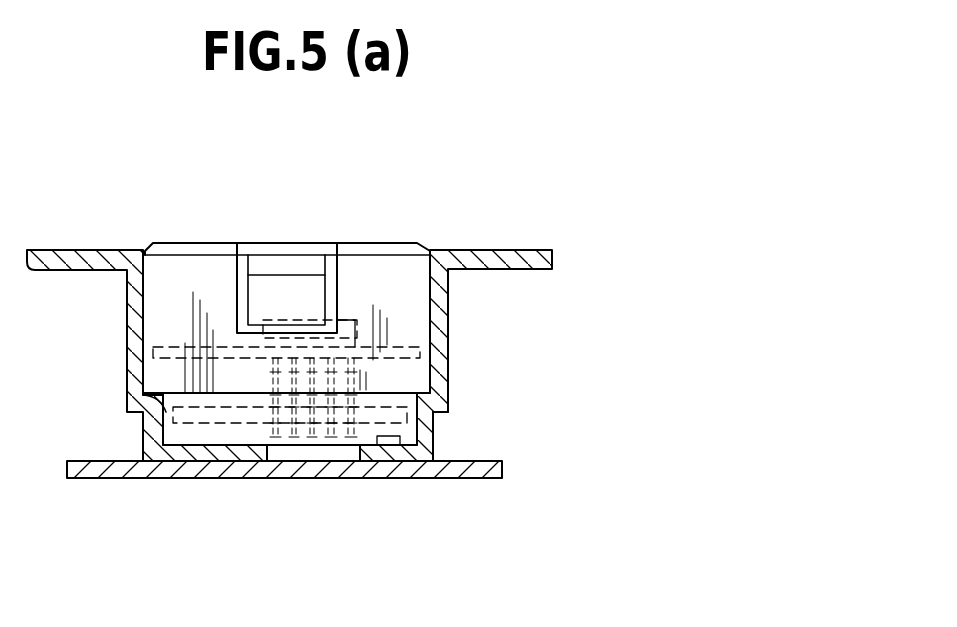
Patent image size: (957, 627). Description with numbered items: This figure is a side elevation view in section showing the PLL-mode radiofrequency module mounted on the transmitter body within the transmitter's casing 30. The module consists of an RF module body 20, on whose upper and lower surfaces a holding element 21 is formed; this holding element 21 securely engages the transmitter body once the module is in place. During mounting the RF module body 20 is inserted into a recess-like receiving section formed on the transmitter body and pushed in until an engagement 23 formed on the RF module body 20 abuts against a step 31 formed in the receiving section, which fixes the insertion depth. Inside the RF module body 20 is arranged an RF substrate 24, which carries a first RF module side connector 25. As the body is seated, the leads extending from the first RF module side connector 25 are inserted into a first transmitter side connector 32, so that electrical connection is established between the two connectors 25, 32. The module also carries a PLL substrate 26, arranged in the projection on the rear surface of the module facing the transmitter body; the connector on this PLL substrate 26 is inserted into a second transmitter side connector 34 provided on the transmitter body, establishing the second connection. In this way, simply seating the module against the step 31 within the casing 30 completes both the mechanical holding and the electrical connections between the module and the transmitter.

The RF module body 20 is at (378, 262).
The holding element 21 is at (285, 250).
The engagement 23 is at (168, 404).
The RF substrate 24 is at (400, 345).
The first RF module side connector 25 is at (350, 320).
The PLL substrate 26 is at (387, 393).
The casing 30 is at (502, 250).
The step 31 is at (448, 424).
The first transmitter side connector 32 is at (278, 452).
The second transmitter side connector 34 is at (468, 468).